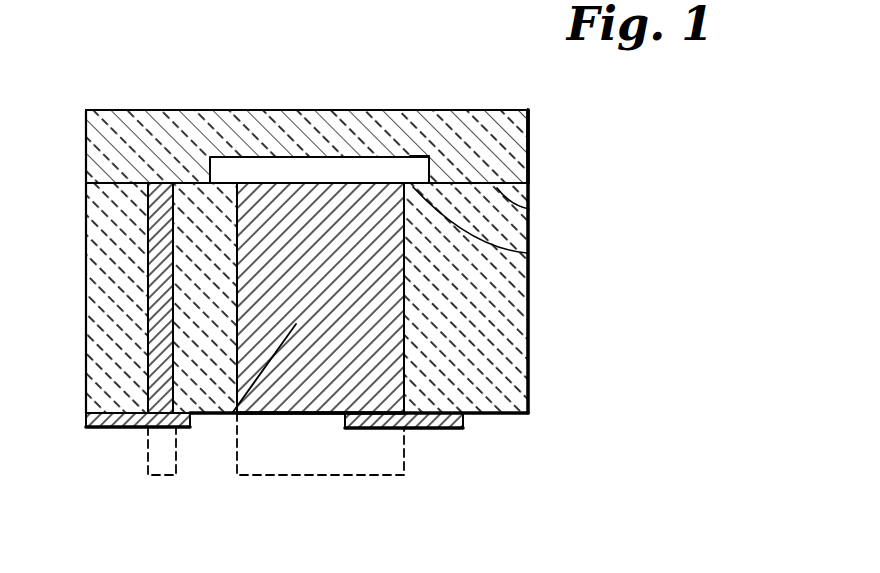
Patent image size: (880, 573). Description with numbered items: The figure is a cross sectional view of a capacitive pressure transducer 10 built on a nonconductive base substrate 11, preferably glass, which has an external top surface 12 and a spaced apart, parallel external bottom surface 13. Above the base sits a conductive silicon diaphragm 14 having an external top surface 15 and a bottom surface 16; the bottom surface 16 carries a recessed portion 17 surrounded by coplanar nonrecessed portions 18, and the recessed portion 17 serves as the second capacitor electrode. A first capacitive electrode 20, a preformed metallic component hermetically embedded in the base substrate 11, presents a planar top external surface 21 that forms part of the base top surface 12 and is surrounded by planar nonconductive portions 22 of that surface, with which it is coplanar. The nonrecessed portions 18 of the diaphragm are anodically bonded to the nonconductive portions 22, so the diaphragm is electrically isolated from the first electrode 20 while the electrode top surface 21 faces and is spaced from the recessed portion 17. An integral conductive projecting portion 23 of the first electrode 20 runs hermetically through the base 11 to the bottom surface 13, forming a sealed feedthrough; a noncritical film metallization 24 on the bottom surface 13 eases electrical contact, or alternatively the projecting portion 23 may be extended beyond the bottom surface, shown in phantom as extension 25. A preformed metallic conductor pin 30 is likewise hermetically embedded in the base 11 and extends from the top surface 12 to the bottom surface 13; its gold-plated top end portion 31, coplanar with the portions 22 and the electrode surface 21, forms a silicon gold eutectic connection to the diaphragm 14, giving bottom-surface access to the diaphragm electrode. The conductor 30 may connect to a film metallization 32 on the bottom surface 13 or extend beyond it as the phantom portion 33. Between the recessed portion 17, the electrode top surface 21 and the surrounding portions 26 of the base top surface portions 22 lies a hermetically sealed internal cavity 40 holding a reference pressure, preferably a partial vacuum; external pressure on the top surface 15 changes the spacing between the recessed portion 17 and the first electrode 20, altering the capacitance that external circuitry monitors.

The capacitive pressure transducer 10 is at (147, 27).
The nonconductive base substrate 11 is at (503, 297).
The external top surface 12 is at (530, 138).
The external bottom surface 13 is at (505, 418).
The conductive diaphragm 14 is at (101, 120).
The external top surface 15 is at (309, 111).
The bottom surface 16 is at (108, 184).
The recessed portion 17 is at (455, 140).
The coplanar nonrecessed portions 18 is at (119, 183).
The first capacitive electrode 20 is at (275, 414).
The top external surface 21 is at (338, 186).
The planar nonconductive portions 22 is at (180, 183).
The conductive projecting portion 23 is at (233, 412).
The film metallization 24 is at (440, 430).
The extension of the projecting portion 25 is at (312, 476).
The portions of the coplanar base top surface portions 26 is at (217, 183).
The metallic conductor pin 30 is at (152, 249).
The top end portion 31 is at (153, 183).
The film metallization 32 is at (103, 428).
The phantom portion 33 is at (148, 477).
The internal cavity 40 is at (285, 167).